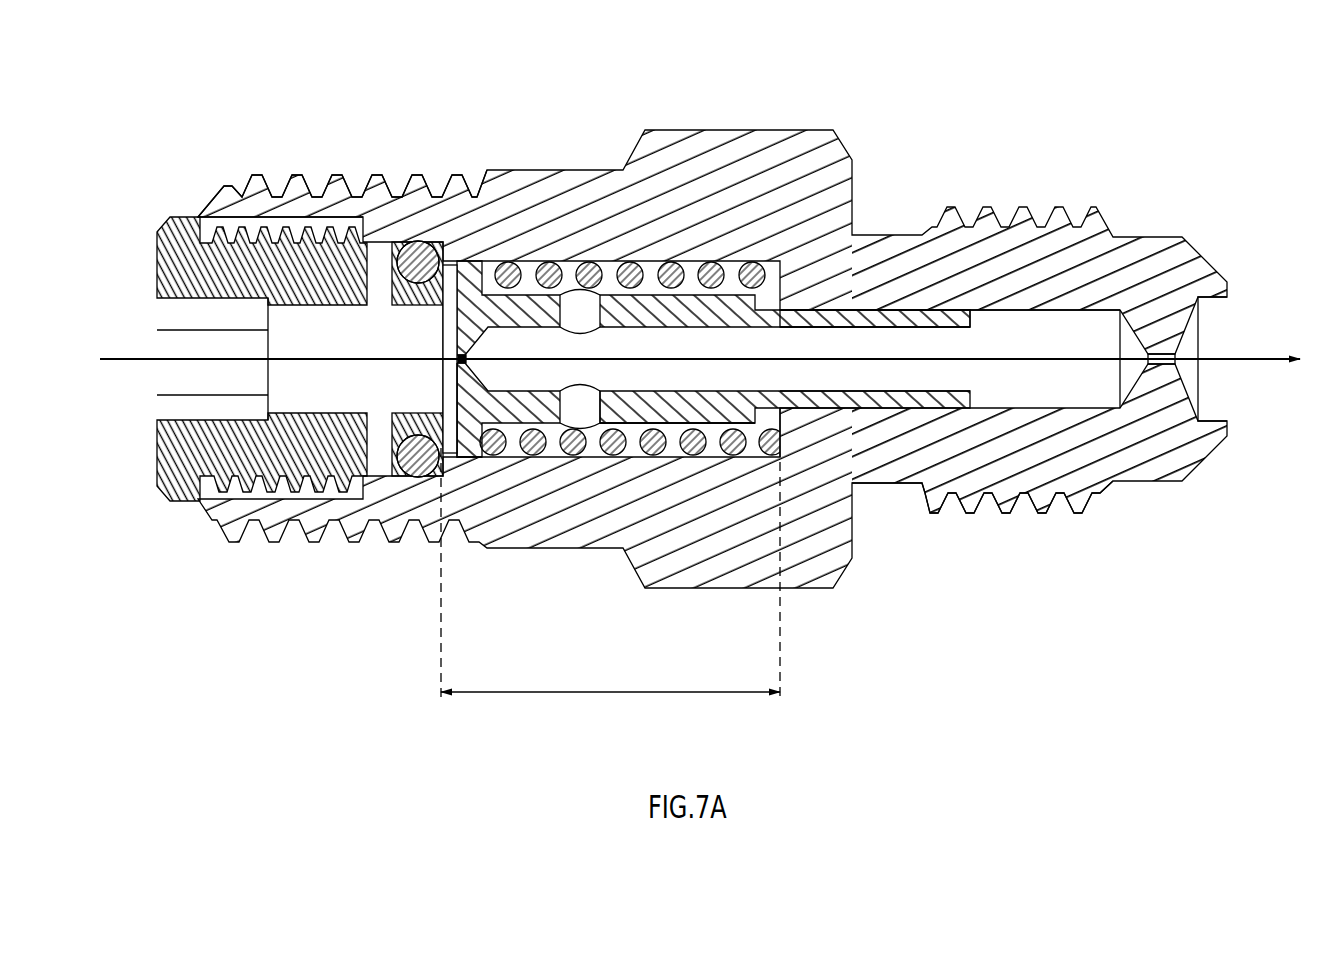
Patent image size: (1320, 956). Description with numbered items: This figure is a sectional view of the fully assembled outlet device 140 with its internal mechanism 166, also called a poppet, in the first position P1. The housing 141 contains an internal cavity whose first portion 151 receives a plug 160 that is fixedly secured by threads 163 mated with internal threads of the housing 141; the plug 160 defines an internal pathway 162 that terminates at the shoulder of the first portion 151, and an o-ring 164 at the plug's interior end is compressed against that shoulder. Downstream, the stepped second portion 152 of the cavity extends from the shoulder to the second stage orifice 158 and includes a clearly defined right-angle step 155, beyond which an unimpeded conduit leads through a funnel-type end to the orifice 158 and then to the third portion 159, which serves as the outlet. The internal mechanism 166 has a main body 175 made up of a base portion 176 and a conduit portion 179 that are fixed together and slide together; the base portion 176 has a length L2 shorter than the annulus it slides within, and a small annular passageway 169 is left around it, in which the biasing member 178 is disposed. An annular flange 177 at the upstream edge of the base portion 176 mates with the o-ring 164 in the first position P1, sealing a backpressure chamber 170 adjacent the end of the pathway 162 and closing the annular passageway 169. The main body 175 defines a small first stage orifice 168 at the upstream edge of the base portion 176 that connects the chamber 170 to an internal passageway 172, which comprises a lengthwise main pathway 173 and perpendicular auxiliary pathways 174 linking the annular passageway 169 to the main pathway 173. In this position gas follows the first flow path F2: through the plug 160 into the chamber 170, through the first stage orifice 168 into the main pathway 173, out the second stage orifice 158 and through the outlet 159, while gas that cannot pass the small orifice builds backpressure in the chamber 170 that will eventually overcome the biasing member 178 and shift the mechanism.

The outlet device 140 is at (957, 120).
The housing 141 is at (602, 193).
The first portion 151 is at (318, 227).
The second portion 152 is at (853, 455).
The step 155 is at (784, 432).
The second stage orifice 158 is at (1184, 355).
The third portion 159 is at (1226, 304).
The plug 160 is at (200, 462).
The internal pathway 162 is at (217, 395).
The threads 163 is at (259, 218).
The o-ring 164 is at (407, 475).
The internal mechanism 166 is at (862, 310).
The first stage orifice 168 is at (464, 350).
The annular passageway 169 is at (698, 266).
The chamber 170 is at (443, 343).
The internal passageway 172 is at (948, 350).
The main pathway 173 is at (800, 342).
The auxiliary pathways 174 is at (563, 385).
The main body 175 is at (658, 424).
The base portion 176 is at (681, 414).
The annular flange 177 is at (458, 461).
The biasing member 178 is at (612, 458).
The conduit portion 179 is at (895, 316).
The first position P1 is at (1007, 147).
The first flow path F2 is at (76, 357).
The length of the base portion L2 is at (610, 575).